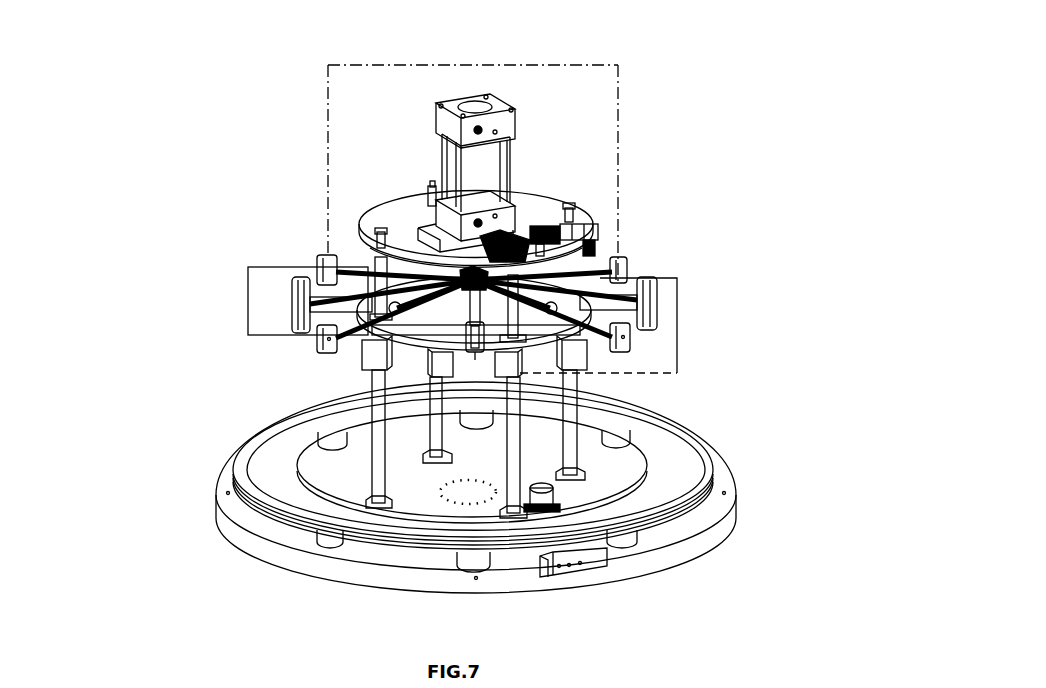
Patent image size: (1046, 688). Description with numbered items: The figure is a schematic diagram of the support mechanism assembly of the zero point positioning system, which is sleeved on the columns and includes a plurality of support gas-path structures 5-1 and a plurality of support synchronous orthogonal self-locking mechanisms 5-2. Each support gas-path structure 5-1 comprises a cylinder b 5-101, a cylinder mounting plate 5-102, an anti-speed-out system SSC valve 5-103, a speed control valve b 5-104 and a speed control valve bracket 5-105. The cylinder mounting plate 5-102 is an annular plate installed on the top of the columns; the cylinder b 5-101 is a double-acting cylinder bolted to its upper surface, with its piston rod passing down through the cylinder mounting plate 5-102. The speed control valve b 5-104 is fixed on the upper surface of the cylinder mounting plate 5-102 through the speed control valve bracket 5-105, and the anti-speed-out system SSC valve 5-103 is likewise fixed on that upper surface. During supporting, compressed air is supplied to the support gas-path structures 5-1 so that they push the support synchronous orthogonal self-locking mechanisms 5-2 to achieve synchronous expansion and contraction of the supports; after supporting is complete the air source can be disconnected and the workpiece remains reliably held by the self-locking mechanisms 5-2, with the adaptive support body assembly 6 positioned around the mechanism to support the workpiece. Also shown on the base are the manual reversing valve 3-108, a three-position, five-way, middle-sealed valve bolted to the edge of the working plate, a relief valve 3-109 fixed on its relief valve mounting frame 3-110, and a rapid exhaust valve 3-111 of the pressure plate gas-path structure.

The support gas-path structure 5-1 is at (328, 98).
The cylinder b 5-101 is at (493, 157).
The cylinder mounting plate 5-102 is at (540, 206).
The rapid exhaust valve 3-111 is at (535, 229).
The anti-speed-out system SSC valve 5-103 is at (585, 243).
The speed control valve b 5-104 is at (640, 292).
The speed control valve bracket 5-105 is at (628, 335).
The support synchronous orthogonal self-locking mechanism 5-2 is at (362, 350).
The adaptive support body assembly 6 is at (248, 300).
The relief valve 3-109 is at (547, 486).
The relief valve mounting frame 3-110 is at (522, 513).
The manual reversing valve 3-108 is at (603, 563).